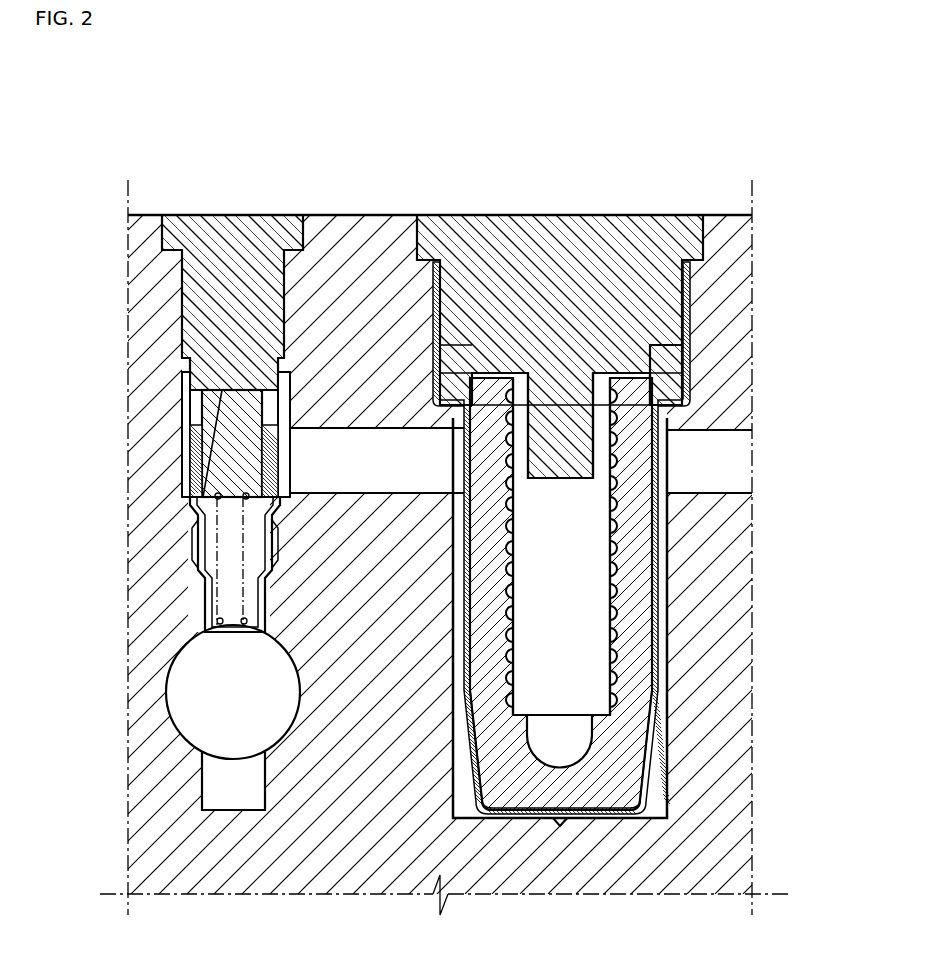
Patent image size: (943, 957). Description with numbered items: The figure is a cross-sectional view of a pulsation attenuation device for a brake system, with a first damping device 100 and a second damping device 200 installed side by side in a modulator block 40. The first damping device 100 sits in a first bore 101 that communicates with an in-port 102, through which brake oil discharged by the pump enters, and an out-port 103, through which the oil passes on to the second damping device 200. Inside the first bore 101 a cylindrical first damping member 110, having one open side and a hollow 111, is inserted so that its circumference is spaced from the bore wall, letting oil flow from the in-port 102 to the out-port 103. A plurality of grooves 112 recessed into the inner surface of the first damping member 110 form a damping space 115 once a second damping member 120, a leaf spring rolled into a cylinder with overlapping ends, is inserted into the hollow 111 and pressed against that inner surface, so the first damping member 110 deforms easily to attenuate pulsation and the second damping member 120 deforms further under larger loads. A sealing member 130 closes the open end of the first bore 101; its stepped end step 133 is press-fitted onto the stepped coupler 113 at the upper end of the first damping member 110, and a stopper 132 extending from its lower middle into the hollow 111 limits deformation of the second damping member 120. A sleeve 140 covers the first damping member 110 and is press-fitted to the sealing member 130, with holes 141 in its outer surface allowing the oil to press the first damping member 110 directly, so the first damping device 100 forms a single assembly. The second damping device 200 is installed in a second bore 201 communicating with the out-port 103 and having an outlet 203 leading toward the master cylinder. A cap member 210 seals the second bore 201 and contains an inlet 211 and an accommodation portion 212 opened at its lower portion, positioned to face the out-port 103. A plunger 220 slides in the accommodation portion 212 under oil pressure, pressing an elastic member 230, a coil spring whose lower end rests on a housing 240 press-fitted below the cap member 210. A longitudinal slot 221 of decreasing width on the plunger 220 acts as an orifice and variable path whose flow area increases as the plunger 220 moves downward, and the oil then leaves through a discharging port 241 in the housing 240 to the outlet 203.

The modulator block 40 is at (712, 745).
The first damping device 100 is at (491, 457).
The first bore 101 is at (660, 703).
The in-port 102 is at (730, 467).
The out-port 103 is at (350, 474).
The first damping member 110 is at (632, 638).
The hollow 111 is at (543, 622).
The grooves 112 is at (617, 553).
The coupler 113 is at (660, 357).
The damping space 115 is at (623, 587).
The second damping member 120 is at (612, 672).
The sealing member 130 is at (519, 205).
The stopper 132 is at (565, 442).
The end step 133 is at (635, 363).
The sleeve 140 is at (657, 612).
The holes 141 is at (657, 526).
The second damping device 200 is at (235, 449).
The second bore 201 is at (182, 374).
The outlet 203 is at (198, 650).
The cap member 210 is at (238, 228).
The inlet 211 is at (196, 416).
The accommodation portion 212 is at (228, 470).
The plunger 220 is at (205, 490).
The slot 221 is at (210, 396).
The elastic member 230 is at (204, 500).
The housing 240 is at (197, 568).
The discharging port 241 is at (192, 530).